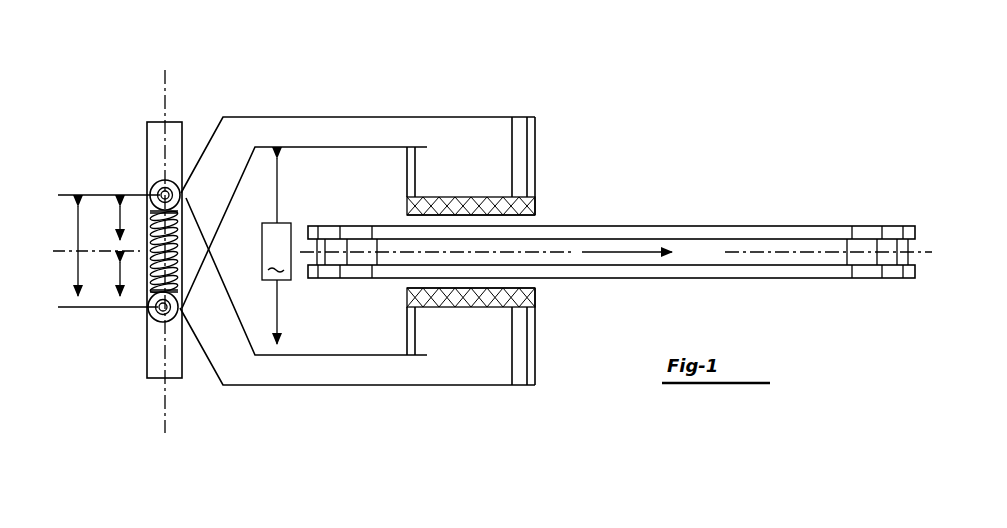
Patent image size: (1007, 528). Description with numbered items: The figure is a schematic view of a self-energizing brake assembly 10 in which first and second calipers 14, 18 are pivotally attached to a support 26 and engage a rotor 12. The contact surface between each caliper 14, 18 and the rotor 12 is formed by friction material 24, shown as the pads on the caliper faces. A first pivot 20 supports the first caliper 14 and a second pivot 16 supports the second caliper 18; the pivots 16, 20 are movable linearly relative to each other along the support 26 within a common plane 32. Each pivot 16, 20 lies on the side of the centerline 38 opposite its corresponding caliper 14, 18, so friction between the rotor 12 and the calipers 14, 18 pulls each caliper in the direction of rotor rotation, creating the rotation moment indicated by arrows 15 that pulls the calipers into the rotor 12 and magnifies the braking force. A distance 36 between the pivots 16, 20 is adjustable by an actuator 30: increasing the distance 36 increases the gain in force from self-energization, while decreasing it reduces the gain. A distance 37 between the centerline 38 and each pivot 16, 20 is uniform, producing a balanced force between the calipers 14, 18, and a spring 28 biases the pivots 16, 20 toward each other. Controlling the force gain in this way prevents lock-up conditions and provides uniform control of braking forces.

The self-energizing brake assembly 10 is at (722, 152).
The rotor 12 is at (742, 282).
The first caliper 14 is at (525, 138).
The arrows 15 is at (370, 60).
The second pivot 16 is at (160, 192).
The second caliper 18 is at (488, 372).
The first pivot 20 is at (166, 308).
The friction material 24 is at (540, 205).
The support 26 is at (147, 352).
The spring 28 is at (183, 204).
The actuator 30 is at (276, 251).
The common plane 32 is at (165, 100).
The distance 36 is at (77, 232).
The distance 37 is at (115, 220).
The centerline 38 is at (925, 248).